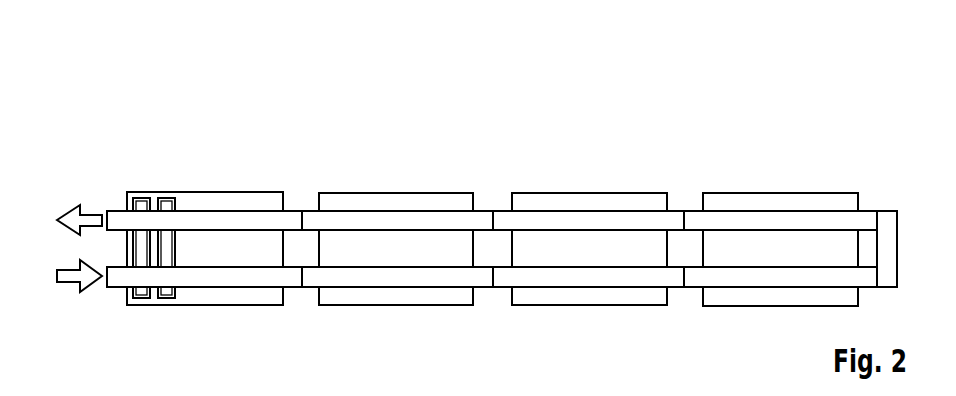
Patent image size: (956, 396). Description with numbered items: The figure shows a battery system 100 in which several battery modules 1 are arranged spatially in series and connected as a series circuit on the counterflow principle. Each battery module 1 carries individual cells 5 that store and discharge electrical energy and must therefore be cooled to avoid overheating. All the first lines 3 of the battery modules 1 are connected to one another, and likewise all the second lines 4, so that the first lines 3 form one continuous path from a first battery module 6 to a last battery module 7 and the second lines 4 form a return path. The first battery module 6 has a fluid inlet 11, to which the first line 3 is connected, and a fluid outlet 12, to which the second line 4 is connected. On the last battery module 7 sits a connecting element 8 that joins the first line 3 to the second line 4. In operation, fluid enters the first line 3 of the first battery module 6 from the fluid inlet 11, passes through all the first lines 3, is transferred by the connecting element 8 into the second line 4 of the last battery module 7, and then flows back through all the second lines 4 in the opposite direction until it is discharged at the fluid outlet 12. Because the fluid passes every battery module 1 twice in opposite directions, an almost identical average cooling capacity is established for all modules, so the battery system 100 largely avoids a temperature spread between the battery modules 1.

The battery system 100 is at (472, 190).
The battery module 1 is at (250, 202).
The first line 3 is at (228, 277).
The second line 4 is at (199, 218).
The individual cell 5 is at (142, 298).
The first battery module 6 is at (150, 158).
The last battery module 7 is at (856, 156).
The connecting element 8 is at (885, 220).
The fluid inlet 11 is at (66, 285).
The fluid outlet 12 is at (80, 208).